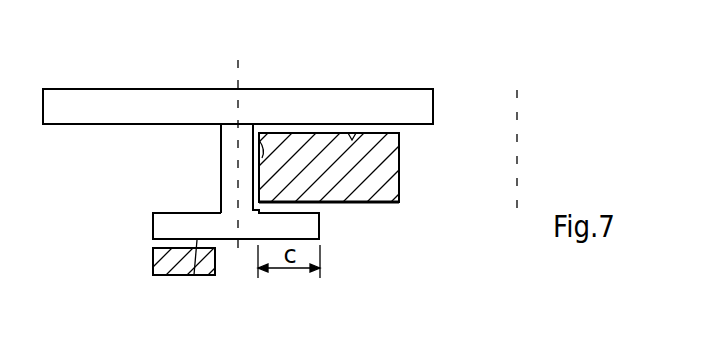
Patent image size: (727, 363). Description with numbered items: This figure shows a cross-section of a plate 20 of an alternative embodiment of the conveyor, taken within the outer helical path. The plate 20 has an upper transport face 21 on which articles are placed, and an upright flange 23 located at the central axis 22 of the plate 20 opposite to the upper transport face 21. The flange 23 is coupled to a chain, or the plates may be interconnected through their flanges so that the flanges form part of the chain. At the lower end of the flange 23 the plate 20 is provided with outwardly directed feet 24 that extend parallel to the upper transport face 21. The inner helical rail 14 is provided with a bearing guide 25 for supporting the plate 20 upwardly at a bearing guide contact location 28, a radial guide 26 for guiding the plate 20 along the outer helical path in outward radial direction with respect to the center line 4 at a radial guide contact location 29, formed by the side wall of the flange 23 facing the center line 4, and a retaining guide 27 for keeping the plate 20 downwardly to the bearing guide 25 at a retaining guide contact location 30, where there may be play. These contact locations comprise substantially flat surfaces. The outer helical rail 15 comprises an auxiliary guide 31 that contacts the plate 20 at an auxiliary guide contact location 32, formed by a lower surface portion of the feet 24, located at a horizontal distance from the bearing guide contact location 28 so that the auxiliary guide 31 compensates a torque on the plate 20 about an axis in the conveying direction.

The center line 4 is at (517, 92).
The inner helical rail 14 is at (393, 160).
The outer helical rail 15 is at (153, 262).
The plate 20 is at (413, 100).
The upper transport face 21 is at (173, 88).
The central axis 22 is at (239, 73).
The flange 23 is at (222, 145).
The feet 24 is at (188, 218).
The bearing guide 25 is at (372, 132).
The radial guide 26 is at (258, 172).
The retaining guide 27 is at (320, 211).
The bearing guide contact location 28 is at (352, 133).
The radial guide contact location 29 is at (263, 150).
The retaining guide contact location 30 is at (330, 193).
The auxiliary guide 31 is at (172, 247).
The auxiliary guide contact location 32 is at (197, 240).